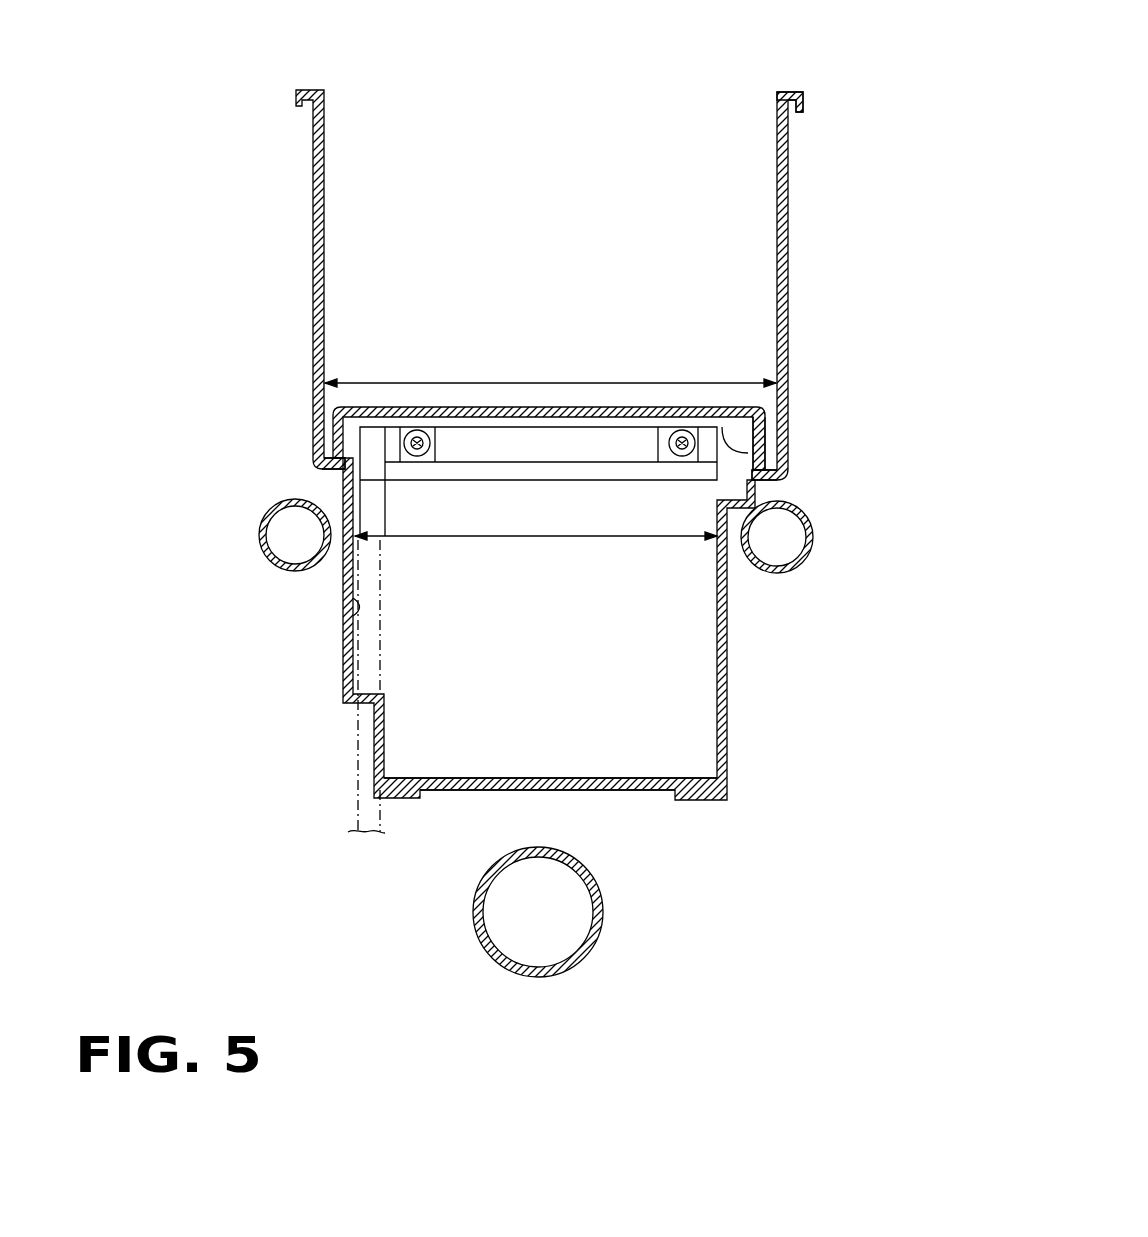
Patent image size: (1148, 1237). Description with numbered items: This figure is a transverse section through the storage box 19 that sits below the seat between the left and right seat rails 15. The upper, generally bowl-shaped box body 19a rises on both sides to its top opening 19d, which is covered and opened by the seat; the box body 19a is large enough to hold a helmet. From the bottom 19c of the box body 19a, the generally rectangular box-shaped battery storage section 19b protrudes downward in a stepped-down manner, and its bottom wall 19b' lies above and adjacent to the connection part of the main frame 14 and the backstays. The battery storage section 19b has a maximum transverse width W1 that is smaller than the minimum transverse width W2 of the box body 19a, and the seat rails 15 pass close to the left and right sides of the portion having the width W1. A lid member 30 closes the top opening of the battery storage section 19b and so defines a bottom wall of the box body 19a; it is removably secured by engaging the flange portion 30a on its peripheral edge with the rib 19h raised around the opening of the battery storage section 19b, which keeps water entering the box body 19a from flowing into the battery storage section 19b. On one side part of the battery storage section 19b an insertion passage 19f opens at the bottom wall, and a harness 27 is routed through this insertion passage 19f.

The storage box 19 is at (557, 449).
The box body 19a is at (787, 255).
The battery storage section 19b is at (593, 629).
The bottom wall of the battery storage section 19b' is at (551, 829).
The bottom of the box body 19c is at (332, 470).
The top opening 19d is at (777, 91).
The insertion passage 19f is at (345, 618).
The rib 19h is at (748, 455).
The lid member 30 is at (623, 413).
The flange portion 30a is at (767, 435).
The seat rails 15 is at (259, 526).
The main frame 14 is at (603, 905).
The harness 27 is at (357, 781).
The maximum transverse width of the battery storage section W1 is at (555, 540).
The minimum transverse width of the box body W2 is at (442, 382).